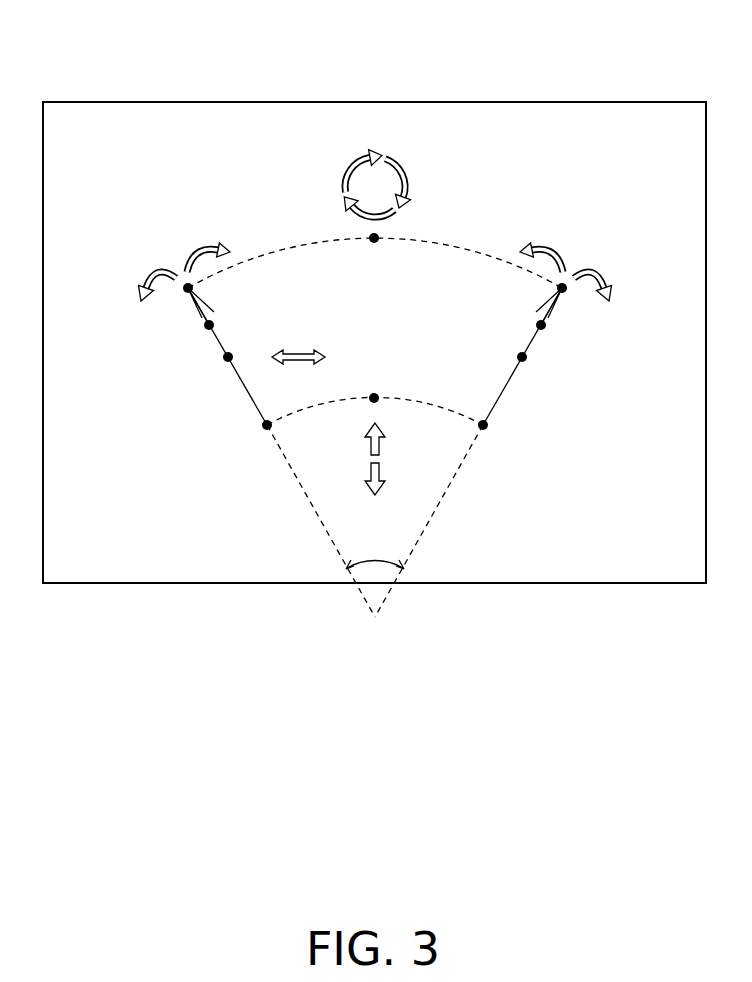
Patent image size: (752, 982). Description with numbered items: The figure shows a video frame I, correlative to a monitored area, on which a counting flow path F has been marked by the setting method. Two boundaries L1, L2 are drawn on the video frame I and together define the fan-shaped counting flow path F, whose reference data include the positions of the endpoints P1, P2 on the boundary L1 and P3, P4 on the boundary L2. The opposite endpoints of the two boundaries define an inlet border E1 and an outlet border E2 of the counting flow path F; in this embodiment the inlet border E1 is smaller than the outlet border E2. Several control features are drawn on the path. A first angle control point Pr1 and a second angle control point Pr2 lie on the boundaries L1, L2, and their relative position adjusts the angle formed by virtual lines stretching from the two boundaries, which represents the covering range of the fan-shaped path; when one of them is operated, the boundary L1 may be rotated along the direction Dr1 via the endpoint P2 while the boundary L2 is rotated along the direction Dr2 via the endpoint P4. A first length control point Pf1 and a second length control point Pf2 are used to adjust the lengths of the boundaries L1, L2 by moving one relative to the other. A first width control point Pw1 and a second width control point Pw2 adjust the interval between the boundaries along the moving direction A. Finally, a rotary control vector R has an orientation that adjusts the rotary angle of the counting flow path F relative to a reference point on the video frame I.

The video frame I is at (614, 88).
The rotary control vector R is at (379, 179).
The outlet border E2 is at (296, 246).
The inlet border E1 is at (320, 406).
The first length control point Pf1 is at (374, 255).
The second length control point Pf2 is at (374, 382).
The counting flow path F is at (366, 333).
The moving direction A is at (289, 350).
The boundary L1 is at (227, 356).
The boundary L2 is at (522, 356).
The endpoint P1 is at (185, 305).
The first angle control point Pr1 is at (231, 316).
The first width control point Pw1 is at (200, 367).
The endpoint P2 is at (254, 441).
The endpoint P3 is at (564, 304).
The second angle control point Pr2 is at (518, 316).
The second width control point Pw2 is at (549, 367).
The endpoint P4 is at (495, 441).
The direction Dr1 is at (329, 260).
The direction Dr2 is at (420, 260).